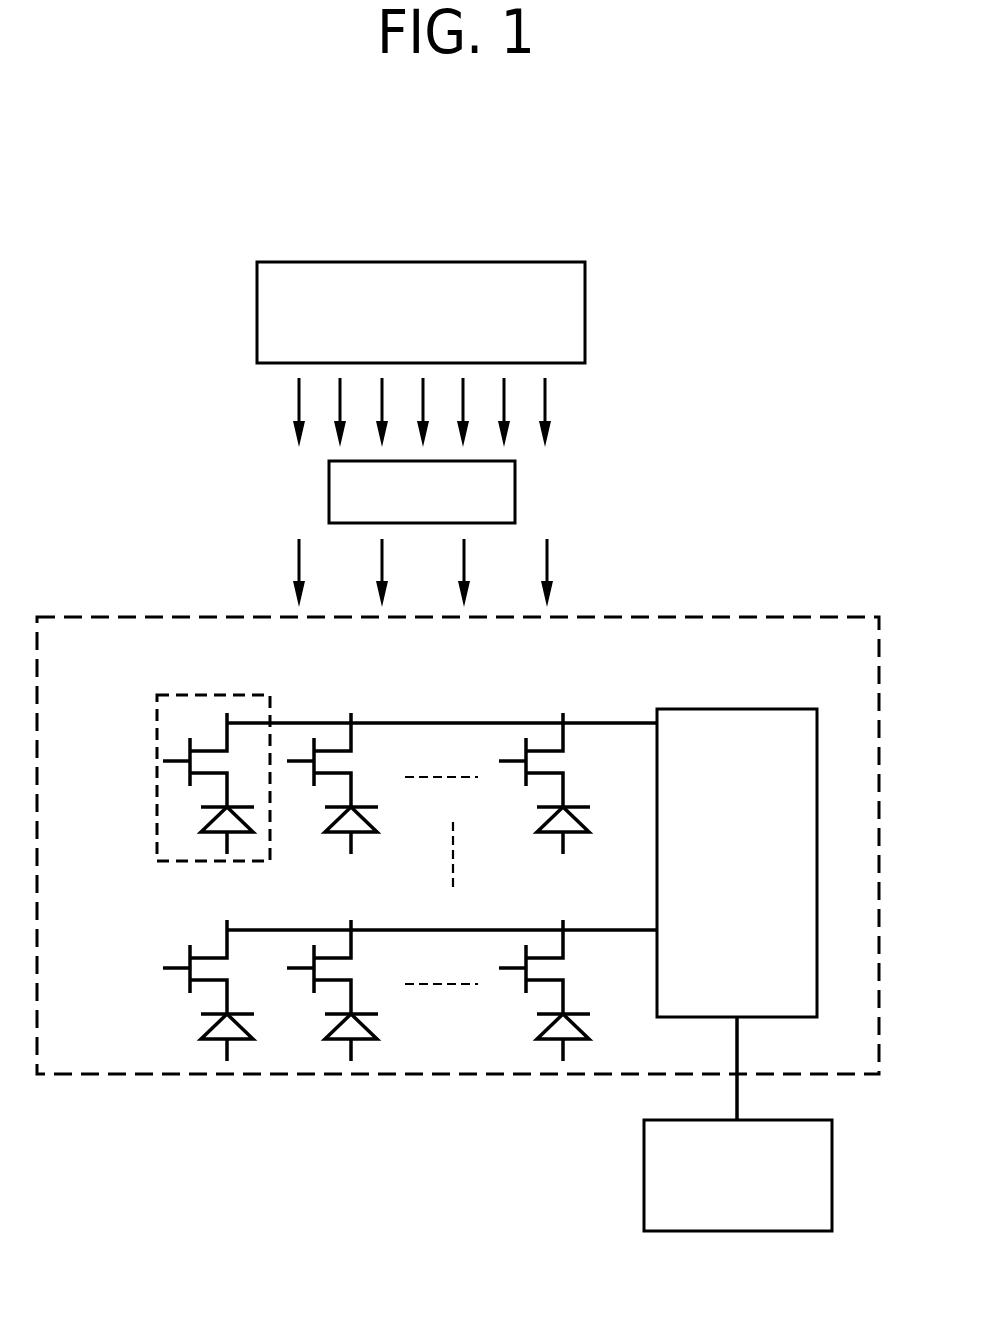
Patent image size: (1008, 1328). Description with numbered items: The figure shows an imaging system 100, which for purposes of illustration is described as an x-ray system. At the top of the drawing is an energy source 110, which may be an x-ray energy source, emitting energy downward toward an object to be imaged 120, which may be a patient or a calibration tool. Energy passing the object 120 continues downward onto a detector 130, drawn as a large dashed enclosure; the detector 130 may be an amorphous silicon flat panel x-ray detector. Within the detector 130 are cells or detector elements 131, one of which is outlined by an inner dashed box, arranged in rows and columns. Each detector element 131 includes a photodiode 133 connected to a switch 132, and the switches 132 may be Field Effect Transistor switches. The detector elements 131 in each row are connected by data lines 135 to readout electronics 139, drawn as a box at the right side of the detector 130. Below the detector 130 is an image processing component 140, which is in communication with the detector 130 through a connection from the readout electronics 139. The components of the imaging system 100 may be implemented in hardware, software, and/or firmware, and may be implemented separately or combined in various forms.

The imaging system 100 is at (203, 170).
The energy source 110 is at (257, 310).
The object to be imaged 120 is at (329, 490).
The detector 130 is at (116, 616).
The detector elements 131 is at (157, 776).
The switches 132 is at (177, 977).
The photodiodes 133 is at (218, 1044).
The data lines 135 is at (440, 722).
The readout electronics 139 is at (817, 863).
The image processing component 140 is at (644, 1173).